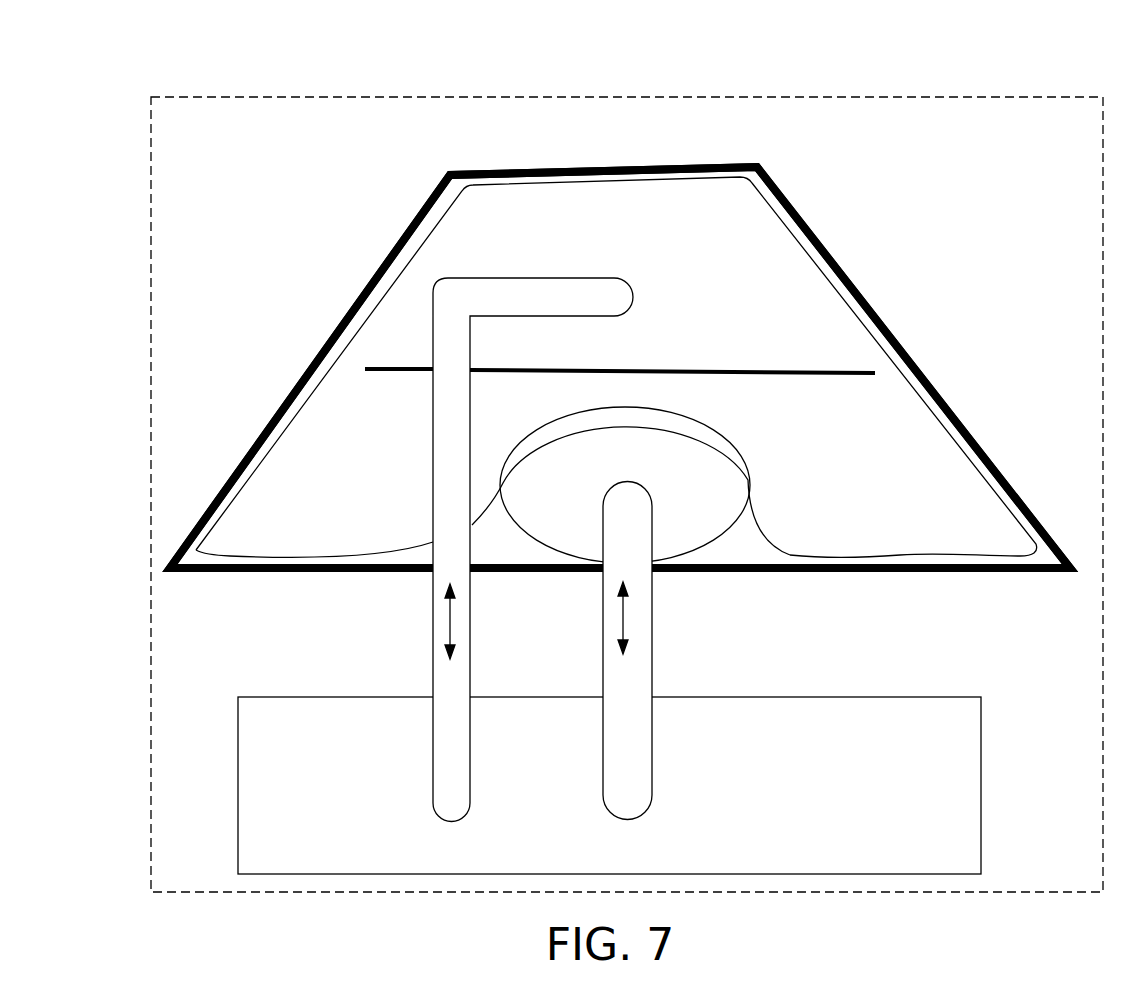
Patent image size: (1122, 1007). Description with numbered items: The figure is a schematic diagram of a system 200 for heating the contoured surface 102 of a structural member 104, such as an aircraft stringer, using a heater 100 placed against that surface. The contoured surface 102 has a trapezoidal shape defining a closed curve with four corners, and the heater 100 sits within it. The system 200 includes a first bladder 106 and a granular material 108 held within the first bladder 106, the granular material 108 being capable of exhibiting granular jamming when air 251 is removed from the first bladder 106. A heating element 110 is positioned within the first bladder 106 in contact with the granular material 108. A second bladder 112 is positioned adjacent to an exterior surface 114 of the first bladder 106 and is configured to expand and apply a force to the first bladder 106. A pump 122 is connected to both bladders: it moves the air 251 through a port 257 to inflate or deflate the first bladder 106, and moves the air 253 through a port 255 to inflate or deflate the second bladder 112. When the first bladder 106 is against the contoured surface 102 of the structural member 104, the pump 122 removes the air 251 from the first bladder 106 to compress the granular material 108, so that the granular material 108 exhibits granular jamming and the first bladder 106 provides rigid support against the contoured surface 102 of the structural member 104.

The system 200 is at (997, 97).
The heater 100 is at (799, 293).
The structural member 104 is at (450, 173).
The granular material 108 is at (666, 317).
The contoured surface 102 is at (190, 556).
The first bladder 106 is at (330, 550).
The exterior surface 114 is at (483, 533).
The heating element 110 is at (645, 368).
The second bladder 112 is at (512, 520).
The pump 122 is at (609, 785).
The port 257 is at (627, 283).
The port 255 is at (622, 481).
The air 251 is at (448, 618).
The air 253 is at (625, 625).